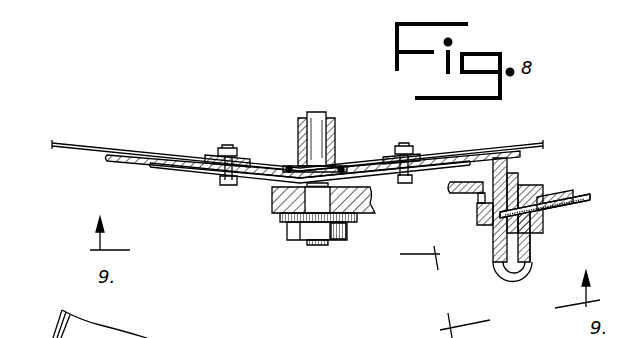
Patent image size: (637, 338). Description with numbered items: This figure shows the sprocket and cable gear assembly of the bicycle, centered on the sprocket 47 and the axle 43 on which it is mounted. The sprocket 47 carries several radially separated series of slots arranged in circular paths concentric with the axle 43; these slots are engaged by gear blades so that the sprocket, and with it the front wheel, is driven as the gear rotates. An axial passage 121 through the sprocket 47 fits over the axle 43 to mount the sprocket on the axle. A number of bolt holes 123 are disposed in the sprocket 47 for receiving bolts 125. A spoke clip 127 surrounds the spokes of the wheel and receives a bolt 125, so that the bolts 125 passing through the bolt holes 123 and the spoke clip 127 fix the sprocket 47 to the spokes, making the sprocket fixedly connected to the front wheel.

The axial passage 121 is at (332, 163).
The spoke clip 127 is at (213, 150).
The bolt holes 123 is at (207, 178).
The bolts 125 is at (227, 184).
The sprocket 47 is at (262, 185).
The axle 43 is at (312, 248).